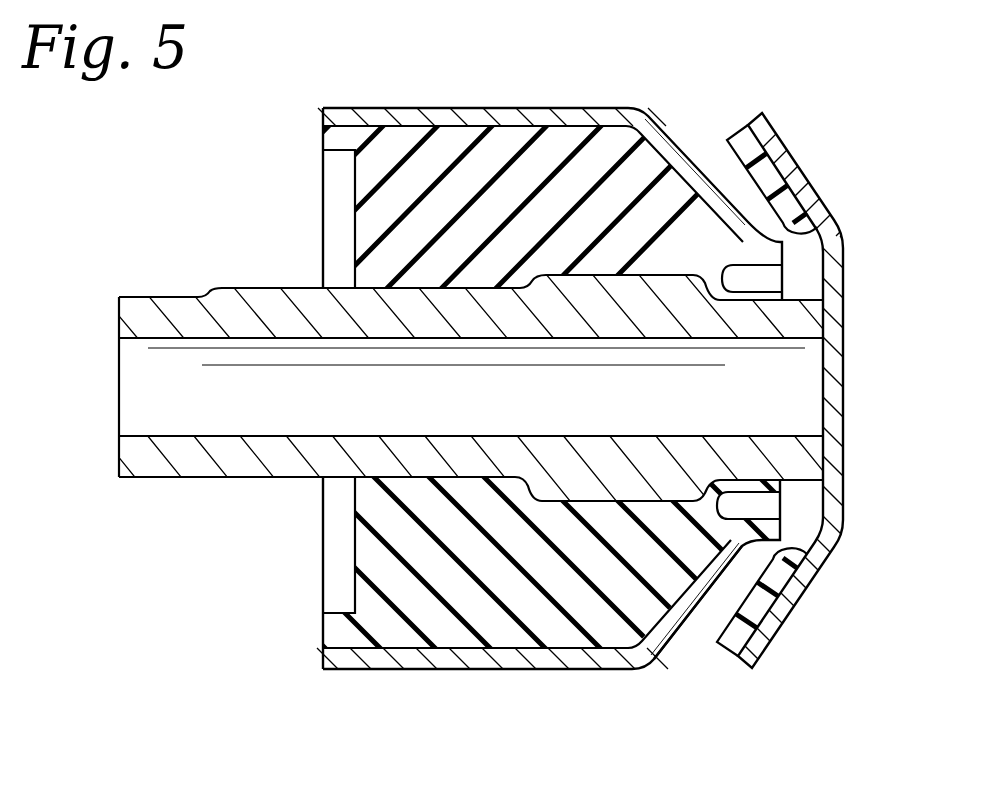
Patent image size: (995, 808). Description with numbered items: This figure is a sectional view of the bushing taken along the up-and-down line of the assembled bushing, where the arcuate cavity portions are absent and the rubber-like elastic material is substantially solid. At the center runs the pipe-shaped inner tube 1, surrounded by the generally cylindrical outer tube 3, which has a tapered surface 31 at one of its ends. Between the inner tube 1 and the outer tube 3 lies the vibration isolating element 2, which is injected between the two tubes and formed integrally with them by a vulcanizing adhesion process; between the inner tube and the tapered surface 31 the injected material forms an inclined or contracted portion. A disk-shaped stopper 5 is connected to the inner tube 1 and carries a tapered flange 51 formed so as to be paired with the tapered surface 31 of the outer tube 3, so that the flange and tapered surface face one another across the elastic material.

The inner tube 1 is at (197, 463).
The vibration isolating element 2 is at (443, 638).
The outer tube 3 is at (542, 670).
The tapered surface 31 is at (688, 628).
The stopper 5 is at (845, 281).
The tapered flange 51 is at (785, 160).